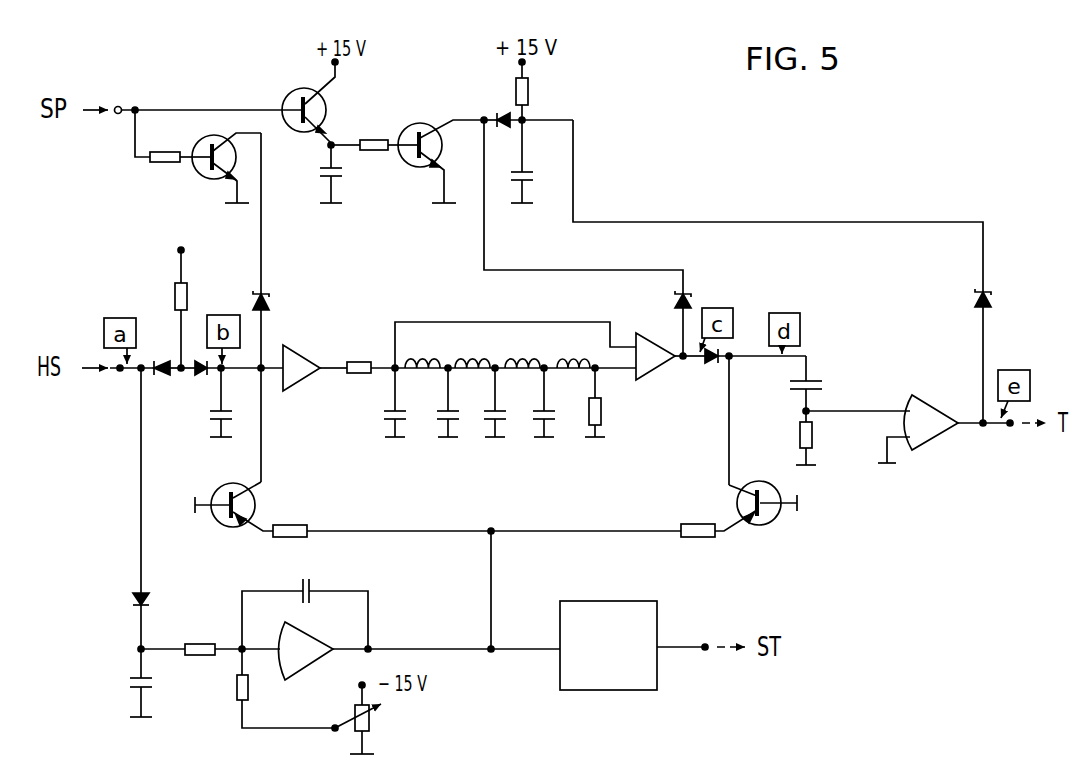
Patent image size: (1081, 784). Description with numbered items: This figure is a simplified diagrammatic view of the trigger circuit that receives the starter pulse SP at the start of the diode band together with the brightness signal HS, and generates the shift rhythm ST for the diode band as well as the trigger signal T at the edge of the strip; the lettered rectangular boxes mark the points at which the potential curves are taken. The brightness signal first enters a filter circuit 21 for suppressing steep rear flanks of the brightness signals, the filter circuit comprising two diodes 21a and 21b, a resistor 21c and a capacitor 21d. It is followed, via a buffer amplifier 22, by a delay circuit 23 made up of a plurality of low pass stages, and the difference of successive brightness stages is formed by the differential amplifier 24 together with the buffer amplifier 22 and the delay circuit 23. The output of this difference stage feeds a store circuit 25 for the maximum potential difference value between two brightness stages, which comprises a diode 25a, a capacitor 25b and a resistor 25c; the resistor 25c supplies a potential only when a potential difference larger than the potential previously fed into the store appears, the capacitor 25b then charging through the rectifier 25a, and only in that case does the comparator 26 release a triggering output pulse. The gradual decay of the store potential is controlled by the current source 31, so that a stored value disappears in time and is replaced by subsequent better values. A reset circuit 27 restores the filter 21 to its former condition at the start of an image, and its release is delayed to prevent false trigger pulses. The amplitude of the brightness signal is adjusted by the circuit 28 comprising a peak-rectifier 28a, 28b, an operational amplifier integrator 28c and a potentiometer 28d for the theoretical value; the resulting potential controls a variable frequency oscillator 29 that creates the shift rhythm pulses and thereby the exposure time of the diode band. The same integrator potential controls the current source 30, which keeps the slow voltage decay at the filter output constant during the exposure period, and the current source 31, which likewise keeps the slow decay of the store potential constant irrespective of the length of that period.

The filter circuit 21 is at (211, 338).
The diode 21a is at (167, 360).
The diode 21b is at (200, 360).
The resistor 21c is at (188, 292).
The capacitor 21d is at (210, 410).
The buffer amplifier 22 is at (310, 360).
The delay circuit 23 is at (518, 394).
The differential amplifier 24 is at (652, 374).
The store circuit 25 is at (786, 411).
The diode 25a is at (708, 366).
The capacitor 25b is at (822, 386).
The resistor 25c is at (812, 438).
The comparator 26 is at (925, 449).
The reset circuit 27 is at (375, 162).
The amplitude adjusting circuit 28 is at (278, 669).
The peak-rectifier 28a is at (150, 603).
The peak-rectifier 28b is at (157, 683).
The operational amplifier integrator 28c is at (318, 646).
The potentiometer 28d is at (372, 731).
The variable frequency oscillator 29 is at (606, 691).
The current source 30 is at (255, 511).
The current source 31 is at (730, 515).